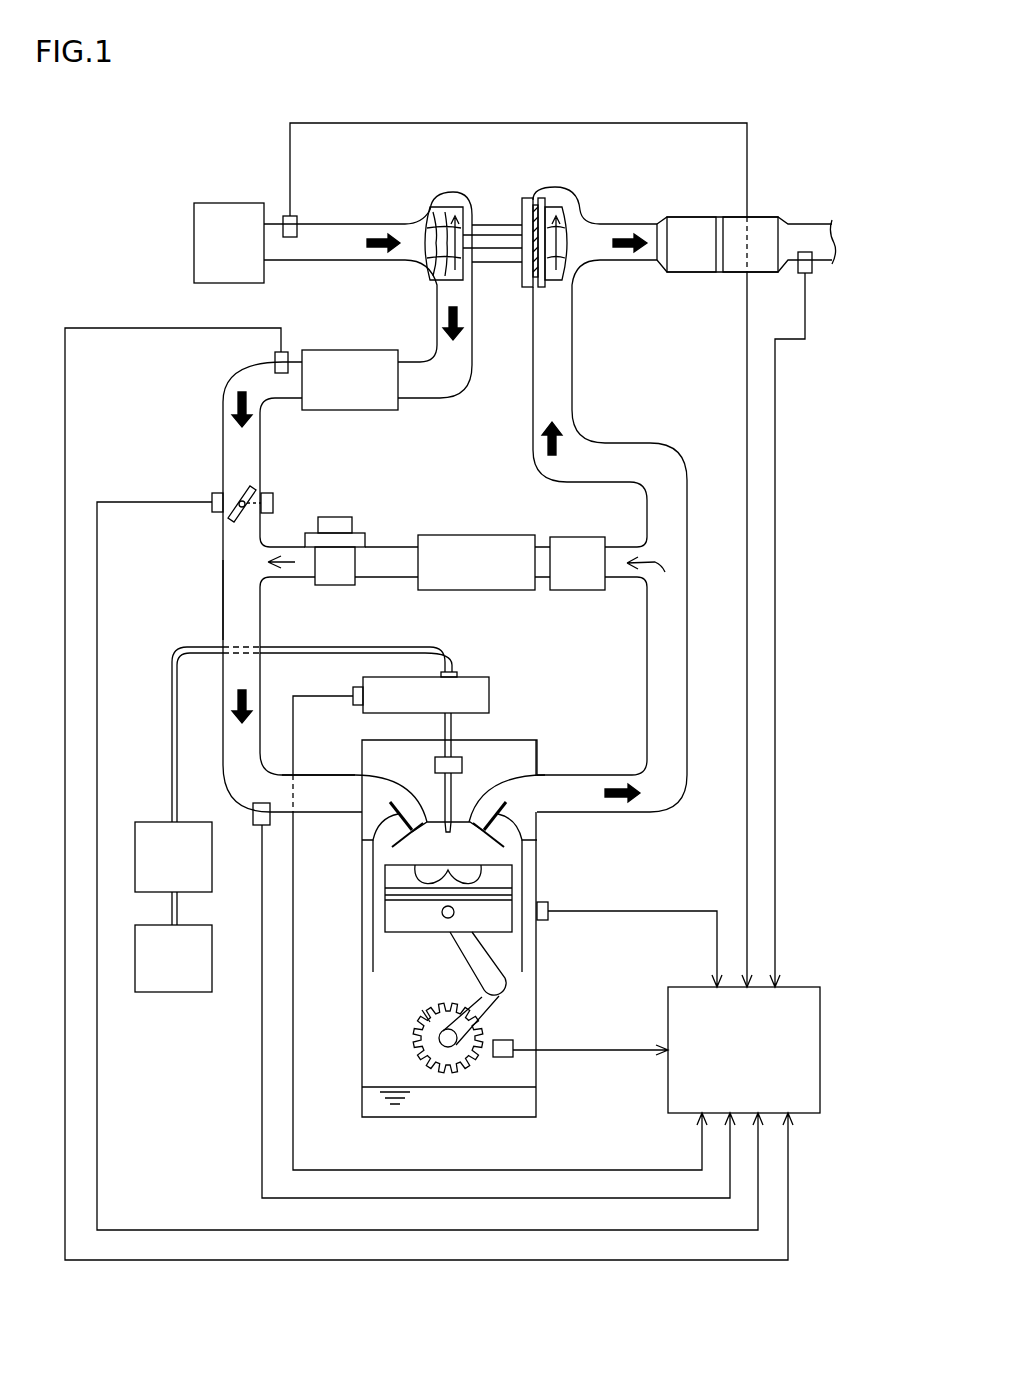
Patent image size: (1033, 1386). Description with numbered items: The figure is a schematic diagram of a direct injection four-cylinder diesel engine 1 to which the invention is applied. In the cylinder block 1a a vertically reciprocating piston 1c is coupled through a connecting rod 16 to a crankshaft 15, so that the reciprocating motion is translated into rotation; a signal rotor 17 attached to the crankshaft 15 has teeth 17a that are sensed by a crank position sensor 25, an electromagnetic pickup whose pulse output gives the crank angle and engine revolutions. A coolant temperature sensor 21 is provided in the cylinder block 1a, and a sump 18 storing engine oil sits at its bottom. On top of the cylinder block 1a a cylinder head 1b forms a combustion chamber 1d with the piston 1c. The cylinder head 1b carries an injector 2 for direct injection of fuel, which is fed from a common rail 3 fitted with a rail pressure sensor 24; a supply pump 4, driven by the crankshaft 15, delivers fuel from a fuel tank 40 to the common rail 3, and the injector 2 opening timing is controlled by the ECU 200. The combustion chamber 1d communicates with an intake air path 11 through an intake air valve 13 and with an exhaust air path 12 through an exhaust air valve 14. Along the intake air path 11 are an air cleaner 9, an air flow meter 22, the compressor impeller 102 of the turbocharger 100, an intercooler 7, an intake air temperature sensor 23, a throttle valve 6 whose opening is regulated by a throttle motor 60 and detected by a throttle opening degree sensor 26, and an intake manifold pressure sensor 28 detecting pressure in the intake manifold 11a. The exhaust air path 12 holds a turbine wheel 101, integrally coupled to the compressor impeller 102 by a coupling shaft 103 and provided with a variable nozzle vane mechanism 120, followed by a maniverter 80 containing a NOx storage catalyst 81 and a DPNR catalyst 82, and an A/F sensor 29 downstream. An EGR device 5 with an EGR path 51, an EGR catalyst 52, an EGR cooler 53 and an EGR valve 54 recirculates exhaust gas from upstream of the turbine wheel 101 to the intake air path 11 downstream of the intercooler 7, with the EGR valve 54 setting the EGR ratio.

The engine 1 is at (467, 896).
The cylinder block 1a is at (538, 937).
The cylinder head 1b is at (538, 748).
The piston 1c is at (388, 918).
The combustion chamber 1d is at (415, 852).
The injector 2 is at (446, 792).
The common rail 3 is at (478, 677).
The supply pump 4 is at (153, 822).
The EGR device 5 is at (466, 552).
The throttle valve 6 is at (243, 496).
The intercooler 7 is at (372, 410).
The air cleaner 9 is at (194, 243).
The intake air path 11 is at (223, 610).
The intake manifold 11a is at (330, 770).
The exhaust air path 12 is at (600, 772).
The intake air valve 13 is at (393, 834).
The exhaust air valve 14 is at (505, 836).
The crankshaft 15 is at (443, 1046).
The connecting rod 16 is at (478, 962).
The signal rotor 17 is at (425, 1008).
The teeth 17a is at (428, 1030).
The sump 18 is at (543, 1105).
The coolant temperature sensor 21 is at (550, 905).
The air flow meter 22 is at (287, 216).
The intake air temperature sensor 23 is at (288, 352).
The rail pressure sensor 24 is at (352, 690).
The crank position sensor 25 is at (505, 1058).
The throttle opening degree sensor 26 is at (217, 512).
The intake manifold pressure sensor 28 is at (258, 826).
The A/F sensor 29 is at (805, 252).
The fuel tank 40 is at (176, 992).
The EGR path 51 is at (617, 580).
The EGR catalyst 52 is at (580, 537).
The EGR cooler 53 is at (470, 535).
The EGR valve 54 is at (340, 517).
The throttle motor 60 is at (273, 495).
The maniverter 80 is at (746, 250).
The NOx storage catalyst 81 is at (691, 215).
The DPNR catalyst 82 is at (763, 213).
The turbocharger 100 is at (565, 269).
The turbine wheel 101 is at (580, 216).
The compressor impeller 102 is at (432, 216).
The coupling shaft 103 is at (495, 250).
The variable nozzle vane mechanism 120 is at (527, 207).
The ECU 200 is at (668, 1004).